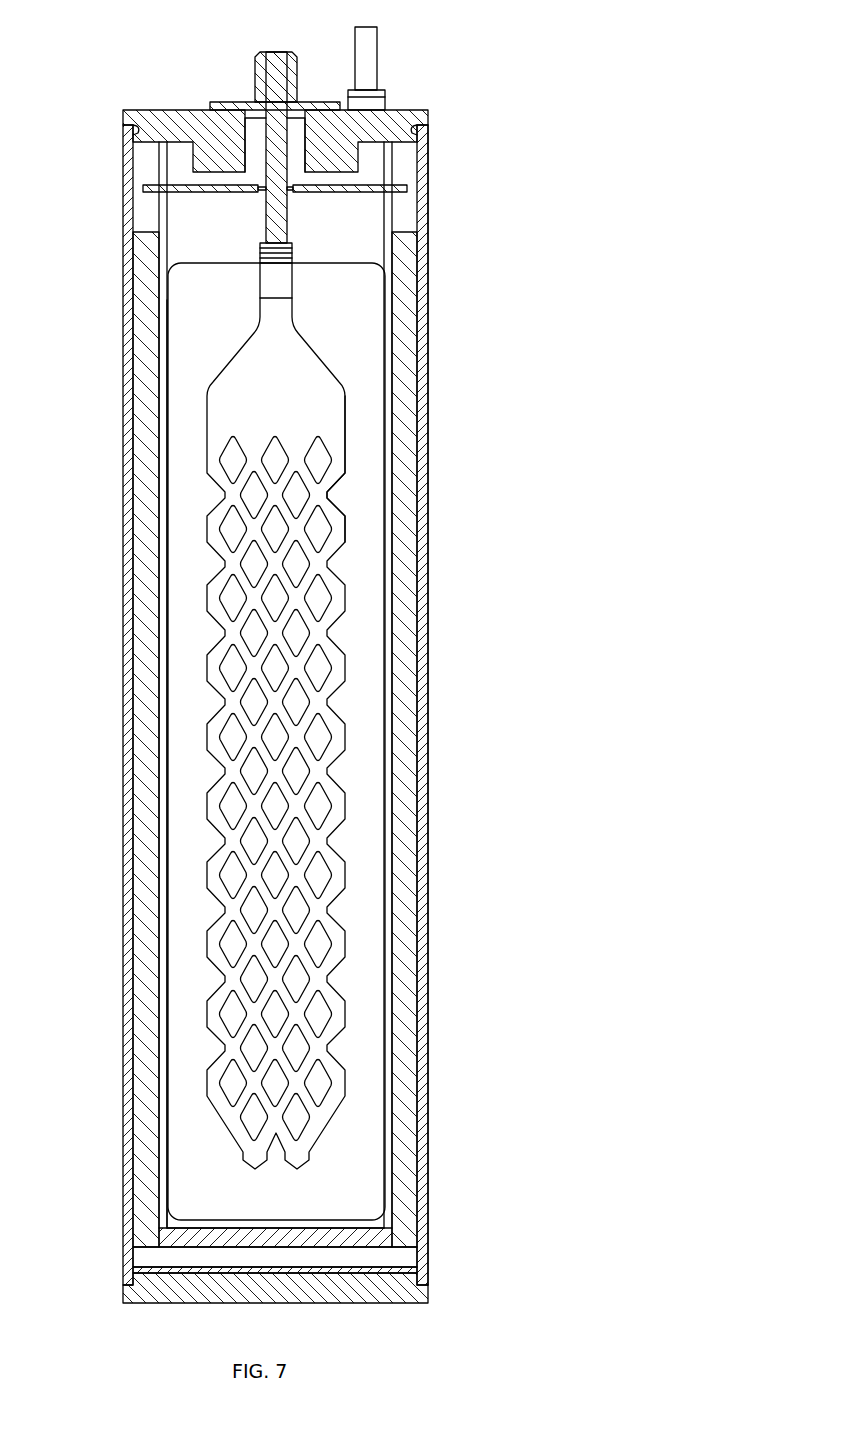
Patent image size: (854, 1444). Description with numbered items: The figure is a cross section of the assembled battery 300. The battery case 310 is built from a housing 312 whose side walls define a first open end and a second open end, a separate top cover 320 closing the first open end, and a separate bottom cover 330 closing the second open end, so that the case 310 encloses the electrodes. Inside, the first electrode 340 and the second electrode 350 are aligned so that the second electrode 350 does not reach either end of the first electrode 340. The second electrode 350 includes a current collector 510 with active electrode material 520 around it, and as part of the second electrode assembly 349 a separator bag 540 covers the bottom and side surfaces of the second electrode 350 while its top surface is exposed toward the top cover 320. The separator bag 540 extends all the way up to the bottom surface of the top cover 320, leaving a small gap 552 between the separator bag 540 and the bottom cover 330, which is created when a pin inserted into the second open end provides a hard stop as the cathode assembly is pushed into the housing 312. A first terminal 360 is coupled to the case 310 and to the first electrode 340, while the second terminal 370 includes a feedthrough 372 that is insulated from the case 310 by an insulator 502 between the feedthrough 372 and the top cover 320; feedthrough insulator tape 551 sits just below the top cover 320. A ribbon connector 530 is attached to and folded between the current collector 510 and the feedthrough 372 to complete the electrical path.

The battery 300 is at (121, 38).
The battery case 310 is at (428, 705).
The housing 312 is at (428, 770).
The top cover 320 is at (397, 122).
The bottom cover 330 is at (173, 1292).
The first electrode 340 is at (400, 555).
The second electrode assembly 349 is at (167, 370).
The second electrode 350 is at (340, 490).
The first terminal 360 is at (378, 53).
The second terminal 370 is at (271, 54).
The feedthrough 372 is at (273, 143).
The insulator 502 is at (297, 142).
The current collector 510 is at (230, 400).
The active electrode material 520 is at (195, 560).
The ribbon connector 530 is at (258, 248).
The separator bag 540 is at (163, 313).
The feedthrough insulator tape 551 is at (147, 183).
The small gap 552 is at (400, 1260).